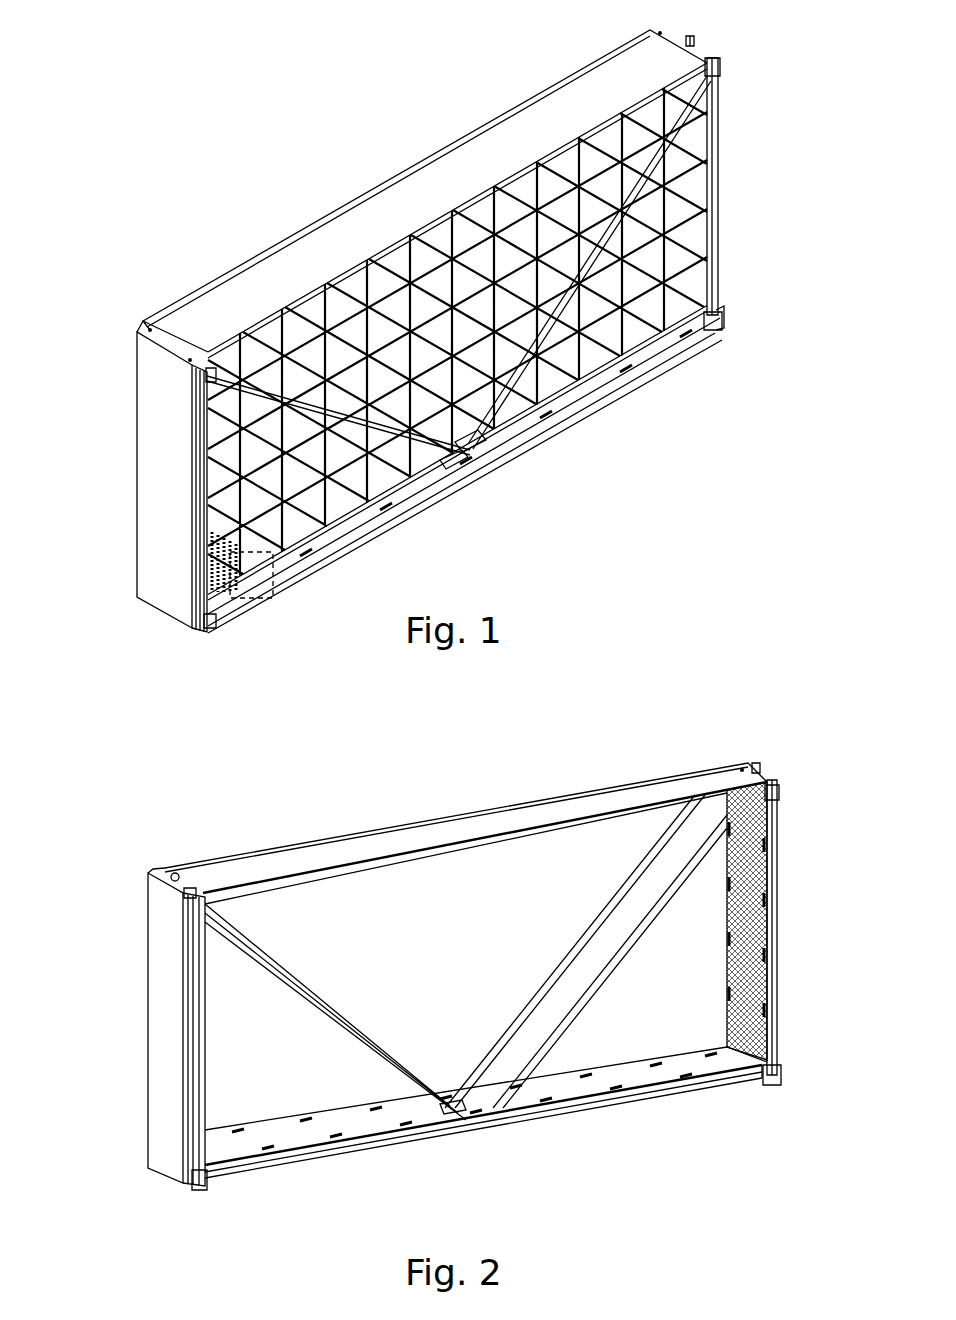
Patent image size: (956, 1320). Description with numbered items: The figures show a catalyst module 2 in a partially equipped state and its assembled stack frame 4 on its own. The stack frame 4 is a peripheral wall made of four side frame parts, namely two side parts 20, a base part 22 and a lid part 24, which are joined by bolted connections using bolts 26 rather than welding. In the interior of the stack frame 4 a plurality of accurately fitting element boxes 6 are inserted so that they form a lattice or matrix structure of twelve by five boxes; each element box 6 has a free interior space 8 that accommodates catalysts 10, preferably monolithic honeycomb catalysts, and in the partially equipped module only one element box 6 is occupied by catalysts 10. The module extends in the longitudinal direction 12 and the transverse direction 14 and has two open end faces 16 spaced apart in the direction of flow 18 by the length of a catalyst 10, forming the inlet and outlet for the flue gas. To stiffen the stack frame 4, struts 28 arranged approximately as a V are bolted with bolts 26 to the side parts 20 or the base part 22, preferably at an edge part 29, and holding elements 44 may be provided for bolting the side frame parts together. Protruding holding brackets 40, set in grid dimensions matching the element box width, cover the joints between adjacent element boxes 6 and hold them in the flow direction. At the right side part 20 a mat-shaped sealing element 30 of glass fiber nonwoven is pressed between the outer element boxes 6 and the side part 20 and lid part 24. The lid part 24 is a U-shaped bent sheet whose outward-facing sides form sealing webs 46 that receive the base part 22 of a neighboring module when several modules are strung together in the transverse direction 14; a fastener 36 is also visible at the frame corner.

In FIG. 1, the catalyst module 2 is at (150, 185).
In FIG. 1, the stack frame 4 is at (498, 160).
In FIG. 2, the stack frame 4 is at (740, 746).
In FIG. 1, the element boxes 6 is at (680, 322).
In FIG. 1, the interior space 8 is at (582, 398).
In FIG. 1, the catalysts 10 is at (216, 590).
In FIG. 1, the longitudinal direction 12 is at (488, 548).
In FIG. 2, the longitudinal direction 12 is at (576, 1174).
In FIG. 1, the transverse direction 14 is at (783, 152).
In FIG. 2, the transverse direction 14 is at (822, 932).
In FIG. 1, the end faces 16 is at (457, 334).
In FIG. 1, the direction of flow 18 is at (74, 629).
In FIG. 2, the direction of flow 18 is at (132, 1181).
In FIG. 1, the side parts 20 is at (155, 480).
In FIG. 2, the side parts 20 is at (165, 985).
In FIG. 1, the base part 22 is at (365, 527).
In FIG. 2, the base part 22 is at (600, 1100).
In FIG. 1, the lid part 24 is at (215, 308).
In FIG. 2, the lid part 24 is at (517, 820).
In FIG. 1, the bolts 26 is at (713, 61).
In FIG. 2, the bolts 26 is at (192, 888).
In FIG. 1, the struts 28 is at (520, 400).
In FIG. 2, the struts 28 is at (466, 957).
In FIG. 1, the edge part 29 is at (412, 480).
In FIG. 2, the edge part 29 is at (330, 1150).
In FIG. 2, the sealing element 30 is at (750, 875).
In FIG. 1, the fastener 36 is at (693, 42).
In FIG. 2, the fastener 36 is at (175, 875).
In FIG. 1, the holding brackets 40 is at (298, 560).
In FIG. 2, the holding brackets 40 is at (670, 1070).
In FIG. 1, the holding elements 44 is at (722, 310).
In FIG. 2, the holding elements 44 is at (775, 1086).
In FIG. 1, the sealing webs 46 is at (378, 247).
In FIG. 2, the sealing webs 46 is at (615, 782).